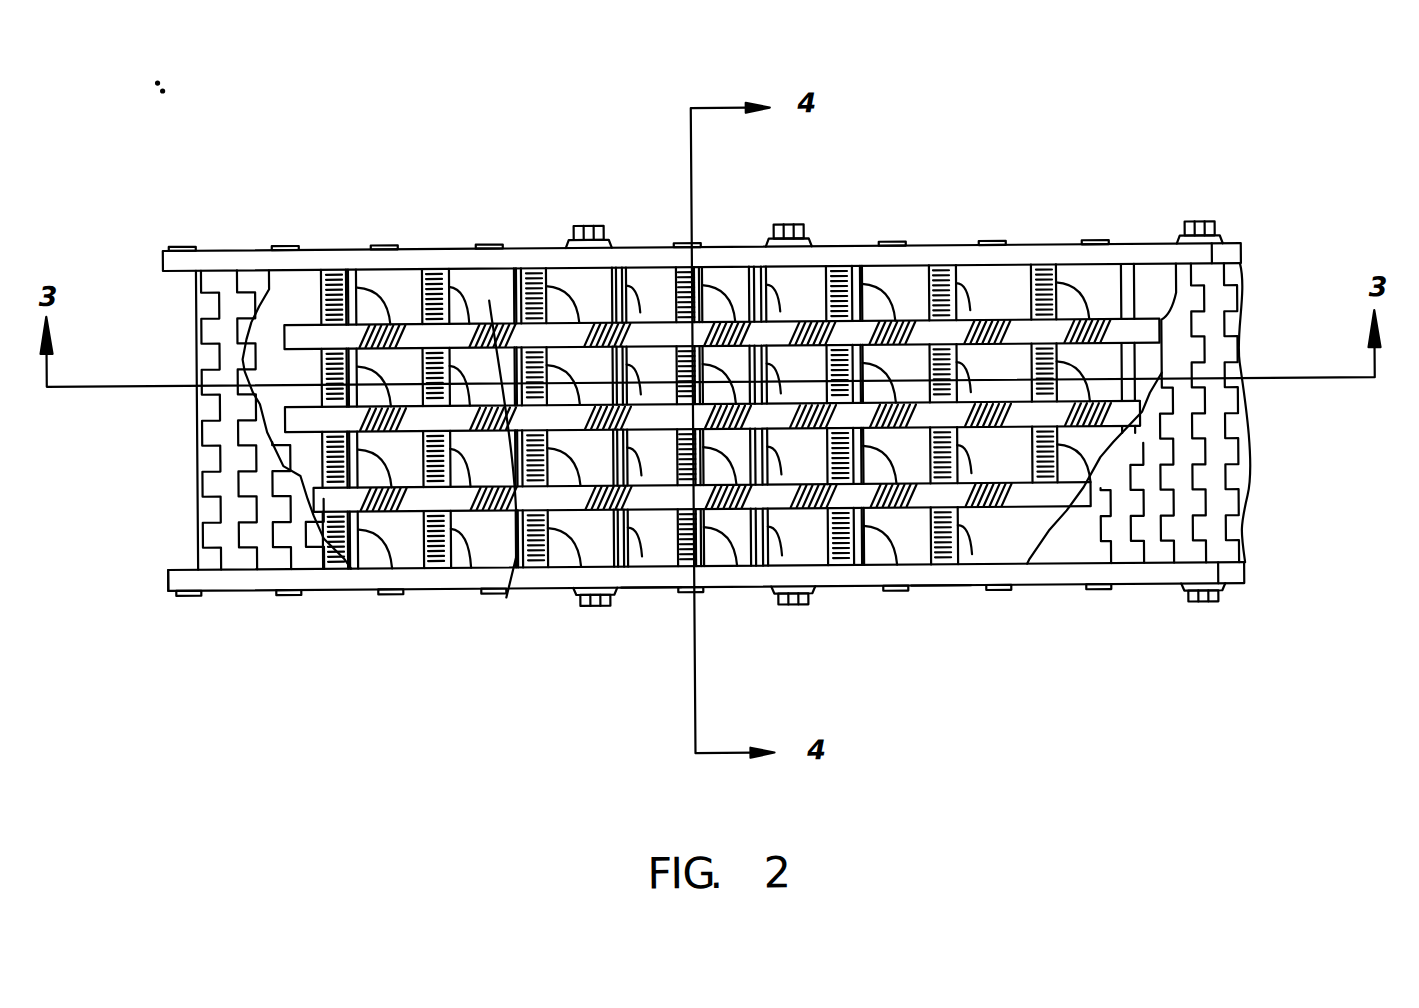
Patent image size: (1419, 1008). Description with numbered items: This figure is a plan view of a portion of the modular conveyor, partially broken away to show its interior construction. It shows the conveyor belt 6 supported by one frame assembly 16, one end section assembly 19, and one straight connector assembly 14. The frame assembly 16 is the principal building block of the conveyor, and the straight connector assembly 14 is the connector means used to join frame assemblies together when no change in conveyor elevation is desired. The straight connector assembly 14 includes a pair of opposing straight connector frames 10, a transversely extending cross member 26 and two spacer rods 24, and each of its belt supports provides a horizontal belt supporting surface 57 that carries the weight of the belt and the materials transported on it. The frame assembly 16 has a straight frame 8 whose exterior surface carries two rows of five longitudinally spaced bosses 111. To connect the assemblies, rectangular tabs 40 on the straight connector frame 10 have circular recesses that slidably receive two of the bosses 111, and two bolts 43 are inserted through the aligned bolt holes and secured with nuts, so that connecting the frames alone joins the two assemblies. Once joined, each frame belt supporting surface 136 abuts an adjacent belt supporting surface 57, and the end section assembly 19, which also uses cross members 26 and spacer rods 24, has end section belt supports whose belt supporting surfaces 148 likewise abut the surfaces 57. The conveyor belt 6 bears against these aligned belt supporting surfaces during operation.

The conveyor belt 6 is at (1186, 518).
The straight frame 8 is at (243, 252).
The straight connector frame 10 is at (655, 262).
The straight connector assembly 14 is at (645, 615).
The frame assembly 16 is at (940, 608).
The end section assembly 19 is at (244, 612).
The spacer rods 24 is at (488, 326).
The cross member 26 is at (330, 565).
The rectangular tabs 40 is at (563, 243).
The bolts 43 is at (585, 229).
The belt supporting surface 57 is at (710, 580).
The bosses 111 is at (887, 245).
The frame belt supporting surface 136 is at (1143, 300).
The belt supporting surfaces 148 is at (405, 430).